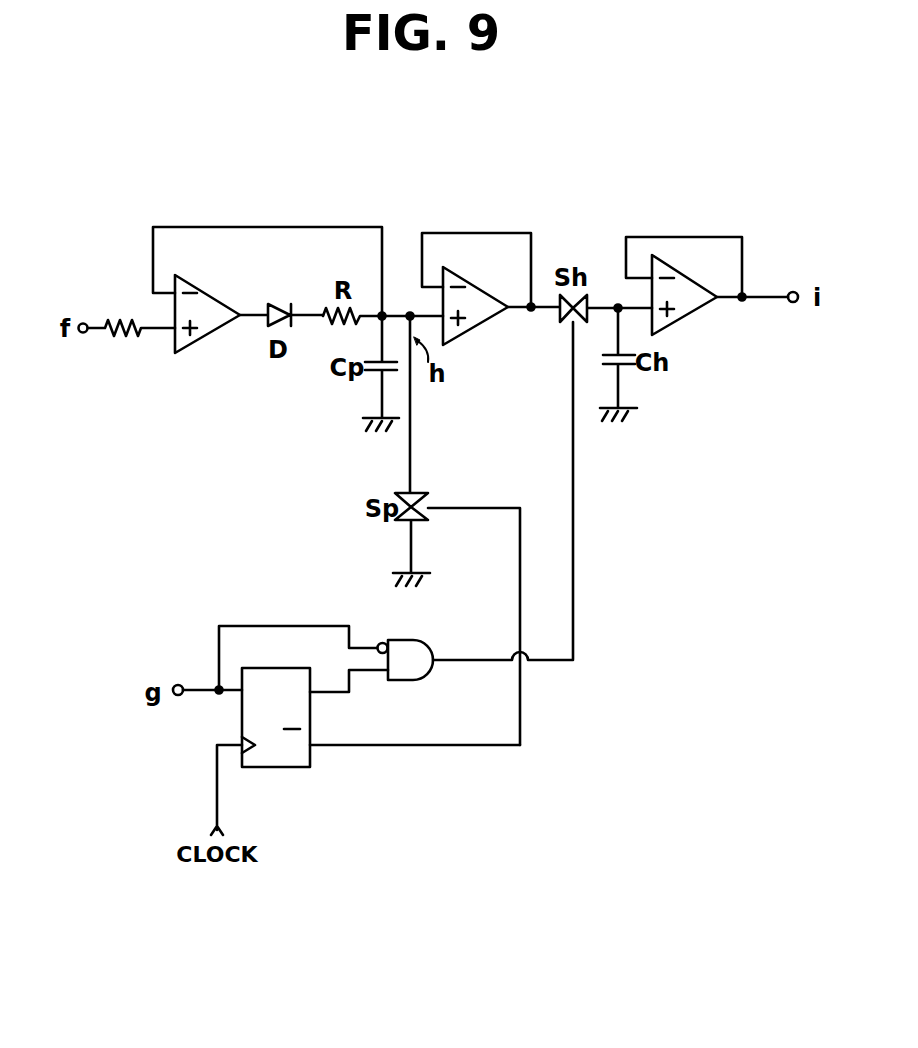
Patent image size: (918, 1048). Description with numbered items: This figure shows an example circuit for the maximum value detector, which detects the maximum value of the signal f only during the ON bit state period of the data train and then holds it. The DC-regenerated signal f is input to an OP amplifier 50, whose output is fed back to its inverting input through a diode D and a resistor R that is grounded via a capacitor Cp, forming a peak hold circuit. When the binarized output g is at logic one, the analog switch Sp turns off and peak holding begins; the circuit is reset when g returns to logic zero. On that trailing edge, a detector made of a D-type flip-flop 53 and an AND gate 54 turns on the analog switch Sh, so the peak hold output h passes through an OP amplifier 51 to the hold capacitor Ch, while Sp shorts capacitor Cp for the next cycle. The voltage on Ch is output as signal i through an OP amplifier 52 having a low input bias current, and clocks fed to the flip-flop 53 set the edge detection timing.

The OP amplifier 50 is at (220, 300).
The OP amplifier 51 is at (487, 289).
The OP amplifier 52 is at (689, 275).
The D-type flip-flop 53 is at (271, 768).
The AND gate 54 is at (430, 677).